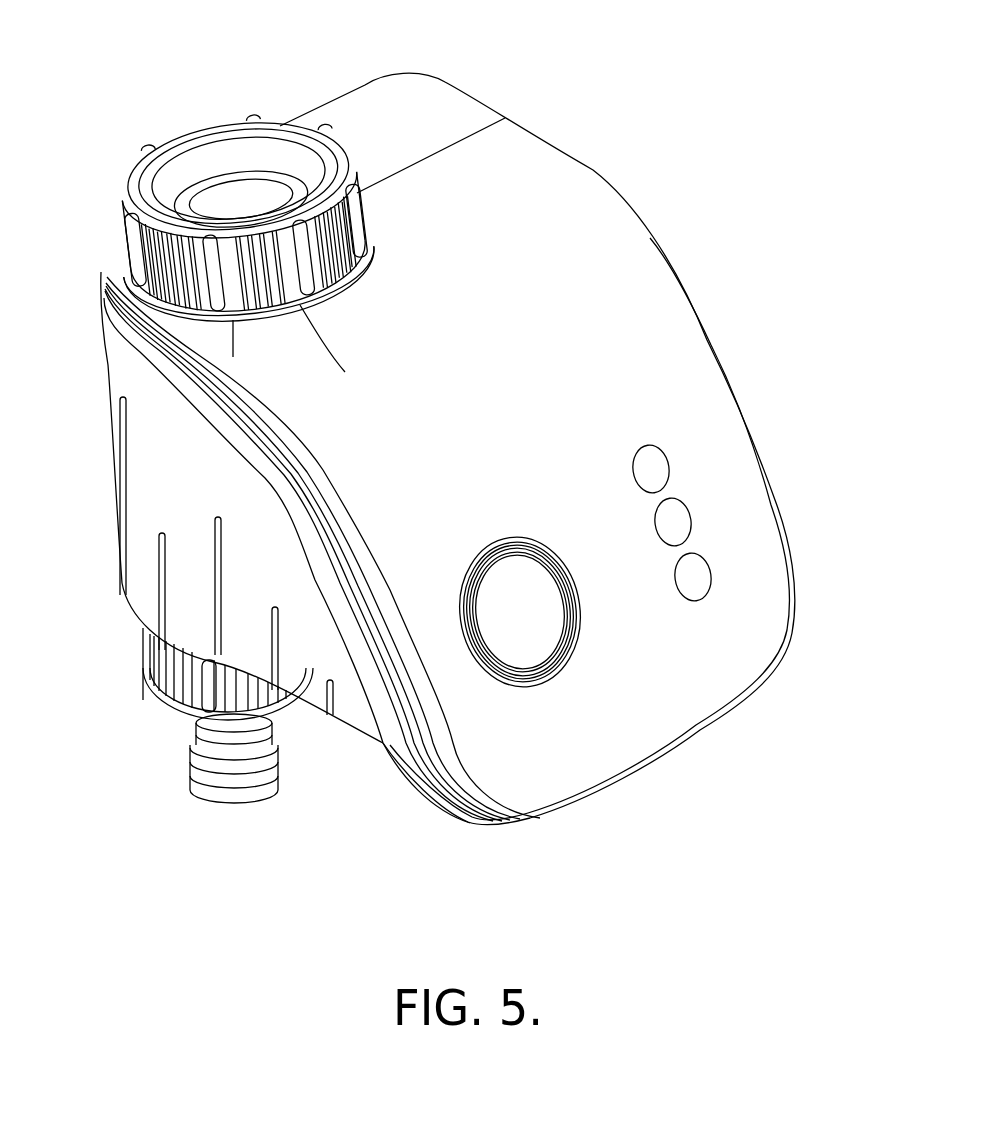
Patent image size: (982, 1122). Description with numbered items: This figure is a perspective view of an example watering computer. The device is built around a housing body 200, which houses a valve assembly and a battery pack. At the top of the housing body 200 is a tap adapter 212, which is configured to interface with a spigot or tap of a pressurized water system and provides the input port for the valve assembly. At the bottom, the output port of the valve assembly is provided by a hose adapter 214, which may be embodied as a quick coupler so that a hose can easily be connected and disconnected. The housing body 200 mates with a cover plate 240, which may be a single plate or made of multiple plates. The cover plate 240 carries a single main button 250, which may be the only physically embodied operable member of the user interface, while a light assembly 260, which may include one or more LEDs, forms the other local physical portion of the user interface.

The housing body 200 is at (157, 497).
The tap adapter 212 is at (207, 137).
The hose adapter 214 is at (253, 785).
The cover plate 240 is at (645, 337).
The main button 250 is at (523, 630).
The light assembly 260 is at (783, 450).